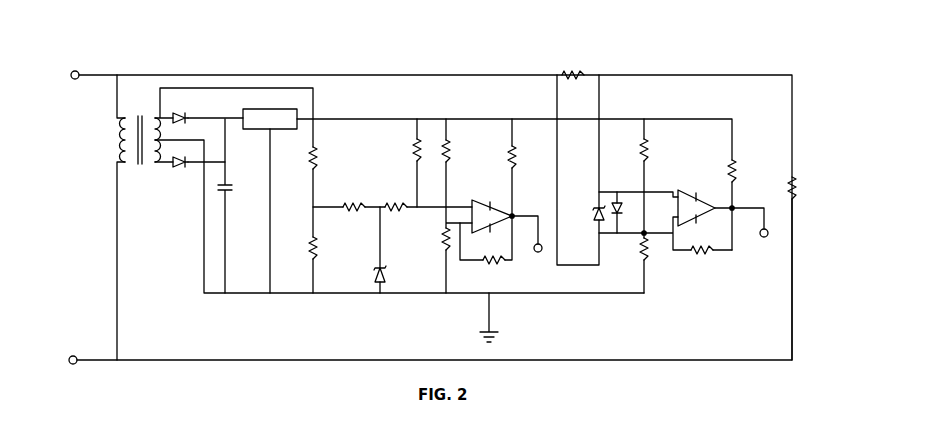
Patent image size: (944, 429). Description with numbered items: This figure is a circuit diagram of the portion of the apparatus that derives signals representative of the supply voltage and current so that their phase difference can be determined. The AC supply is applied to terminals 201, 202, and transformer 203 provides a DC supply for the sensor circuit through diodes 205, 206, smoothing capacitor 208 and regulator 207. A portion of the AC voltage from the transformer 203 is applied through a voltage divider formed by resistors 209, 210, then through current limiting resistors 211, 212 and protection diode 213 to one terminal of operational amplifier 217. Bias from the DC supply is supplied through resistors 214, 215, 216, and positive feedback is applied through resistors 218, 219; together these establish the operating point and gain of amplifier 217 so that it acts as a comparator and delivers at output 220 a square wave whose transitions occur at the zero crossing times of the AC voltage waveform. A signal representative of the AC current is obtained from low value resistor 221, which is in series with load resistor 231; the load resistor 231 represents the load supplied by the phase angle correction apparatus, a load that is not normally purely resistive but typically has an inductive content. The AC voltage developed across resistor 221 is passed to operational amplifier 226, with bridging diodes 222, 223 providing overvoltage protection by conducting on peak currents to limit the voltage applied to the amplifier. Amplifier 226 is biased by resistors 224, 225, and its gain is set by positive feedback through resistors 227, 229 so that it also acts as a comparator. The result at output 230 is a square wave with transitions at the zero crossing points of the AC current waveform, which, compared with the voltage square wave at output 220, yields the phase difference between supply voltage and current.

The terminal 201 is at (78, 68).
The terminal 202 is at (72, 355).
The transformer 203 is at (118, 145).
The diode 205 is at (172, 168).
The diode 206 is at (178, 110).
The regulator 207 is at (283, 108).
The smoothing capacitor 208 is at (213, 188).
The voltage divider resistor 209 is at (317, 150).
The voltage divider resistor 210 is at (308, 260).
The current limiting resistor 211 is at (353, 193).
The current limiting resistor 212 is at (397, 217).
The protection diode 213 is at (386, 296).
The bias resistor 214 is at (425, 142).
The bias resistor 215 is at (462, 160).
The bias resistor 216 is at (440, 243).
The operational amplifier 217 is at (497, 210).
The positive feedback resistor 218 is at (495, 268).
The positive feedback resistor 219 is at (513, 138).
The output 220 is at (541, 252).
The low value resistor 221 is at (577, 68).
The bridging diode 222 is at (597, 206).
The bridging diode 223 is at (615, 235).
The bias resistor 224 is at (653, 147).
The bias resistor 225 is at (647, 262).
The operational amplifier 226 is at (688, 182).
The positive feedback resistor 227 is at (740, 170).
The positive feedback resistor 229 is at (698, 260).
The output 230 is at (773, 238).
The load resistor 231 is at (798, 183).